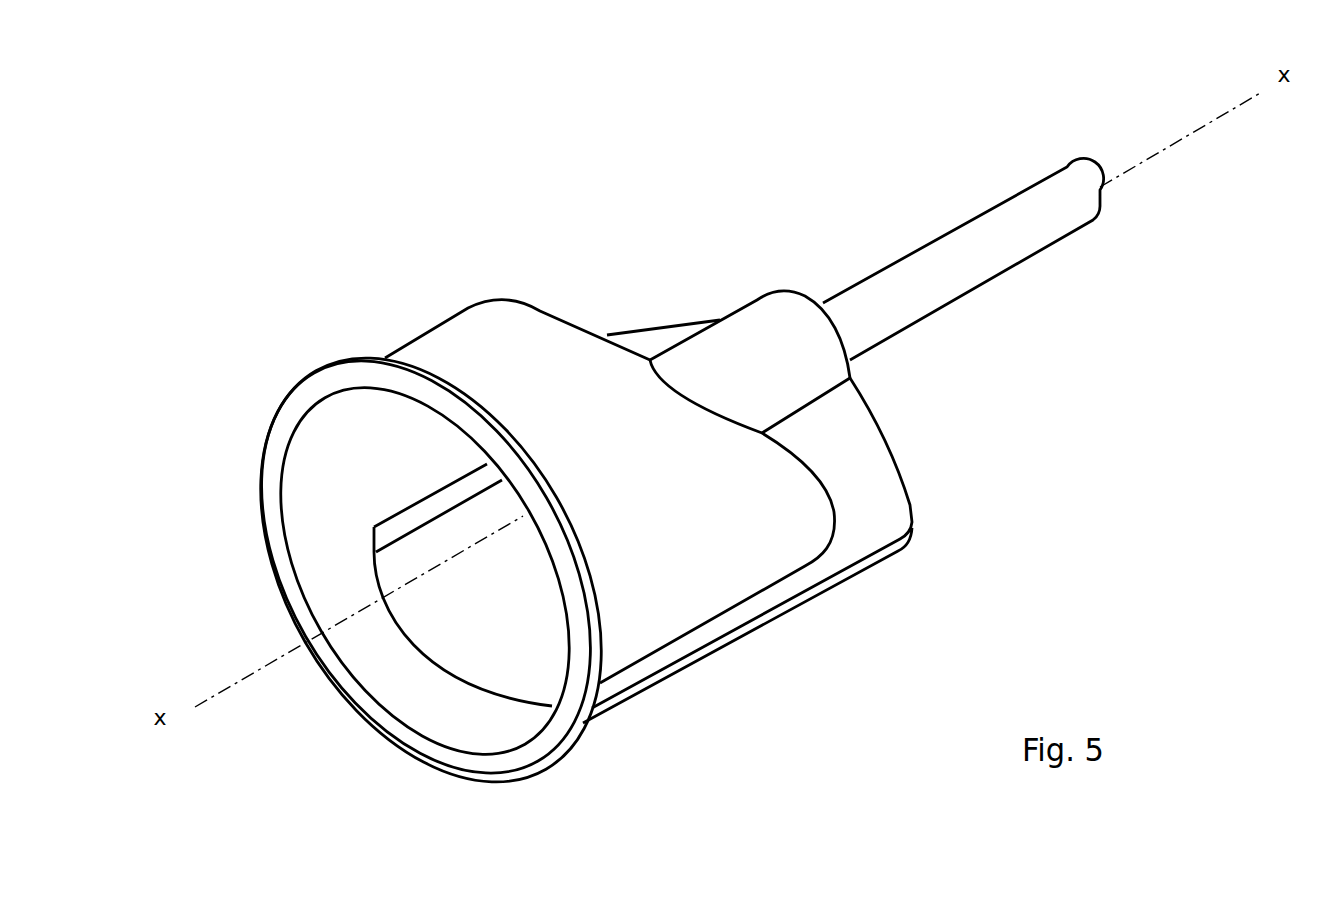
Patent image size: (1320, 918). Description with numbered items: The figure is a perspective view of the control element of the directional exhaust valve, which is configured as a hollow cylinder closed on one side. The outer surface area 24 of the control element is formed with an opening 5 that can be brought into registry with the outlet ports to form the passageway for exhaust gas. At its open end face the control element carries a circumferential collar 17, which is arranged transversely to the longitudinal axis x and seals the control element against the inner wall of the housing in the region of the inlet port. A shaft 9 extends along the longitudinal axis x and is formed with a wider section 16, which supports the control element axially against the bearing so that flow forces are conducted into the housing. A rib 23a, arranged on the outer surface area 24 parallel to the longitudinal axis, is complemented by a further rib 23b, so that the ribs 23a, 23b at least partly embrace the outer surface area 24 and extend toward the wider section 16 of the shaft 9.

The opening 5 is at (497, 619).
The shaft 9 is at (1004, 228).
The wider section 16 is at (753, 335).
The collar 17 is at (303, 402).
The rib 23a is at (852, 462).
The further rib 23b is at (652, 343).
The outer surface area 24 is at (490, 320).